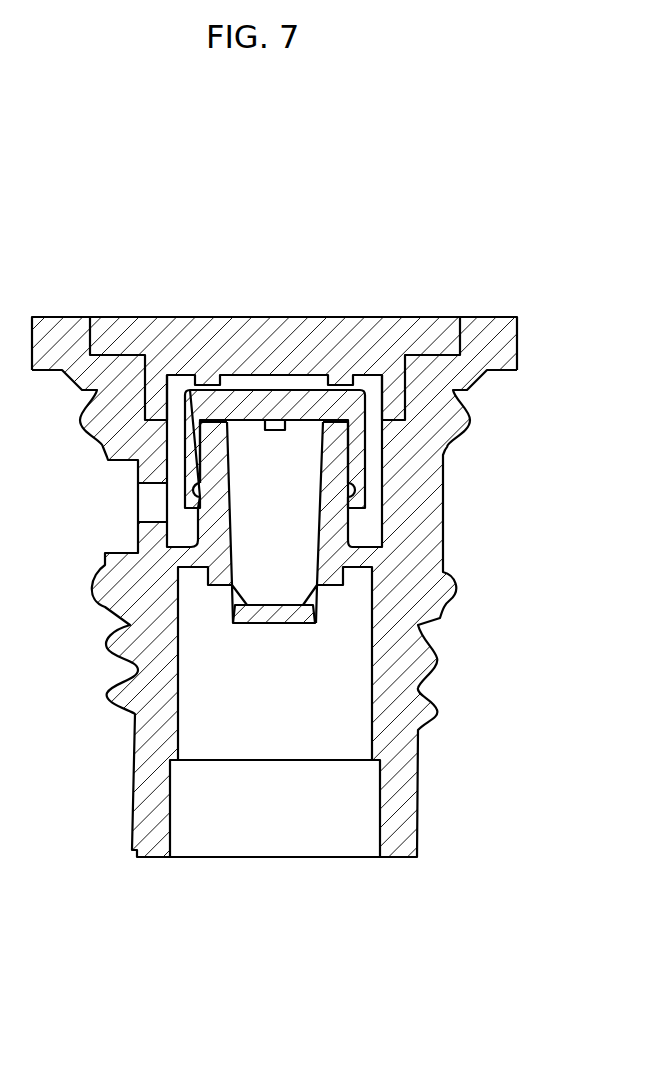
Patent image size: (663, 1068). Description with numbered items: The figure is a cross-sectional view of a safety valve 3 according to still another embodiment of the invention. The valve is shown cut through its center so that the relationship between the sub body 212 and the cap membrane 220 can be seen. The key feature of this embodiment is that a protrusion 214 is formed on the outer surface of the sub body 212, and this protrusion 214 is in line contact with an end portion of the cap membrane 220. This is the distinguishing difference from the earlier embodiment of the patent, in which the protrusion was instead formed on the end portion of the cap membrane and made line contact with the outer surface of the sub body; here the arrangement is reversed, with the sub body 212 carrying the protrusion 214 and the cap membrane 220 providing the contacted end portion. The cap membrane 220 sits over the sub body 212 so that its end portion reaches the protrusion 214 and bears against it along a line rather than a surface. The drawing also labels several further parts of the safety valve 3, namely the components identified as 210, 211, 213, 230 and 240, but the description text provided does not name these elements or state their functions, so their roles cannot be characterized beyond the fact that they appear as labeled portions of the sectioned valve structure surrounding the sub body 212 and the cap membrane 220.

The safety valve 3 is at (464, 266).
The nozzle body 210 is at (420, 587).
The side port 211 is at (155, 503).
The sub body 212 is at (215, 550).
The orifice plate 213 is at (315, 594).
The protrusion 214 is at (352, 487).
The cap membrane 220 is at (350, 403).
The fixing flange 230 is at (295, 330).
The lower cavity 240 is at (283, 743).